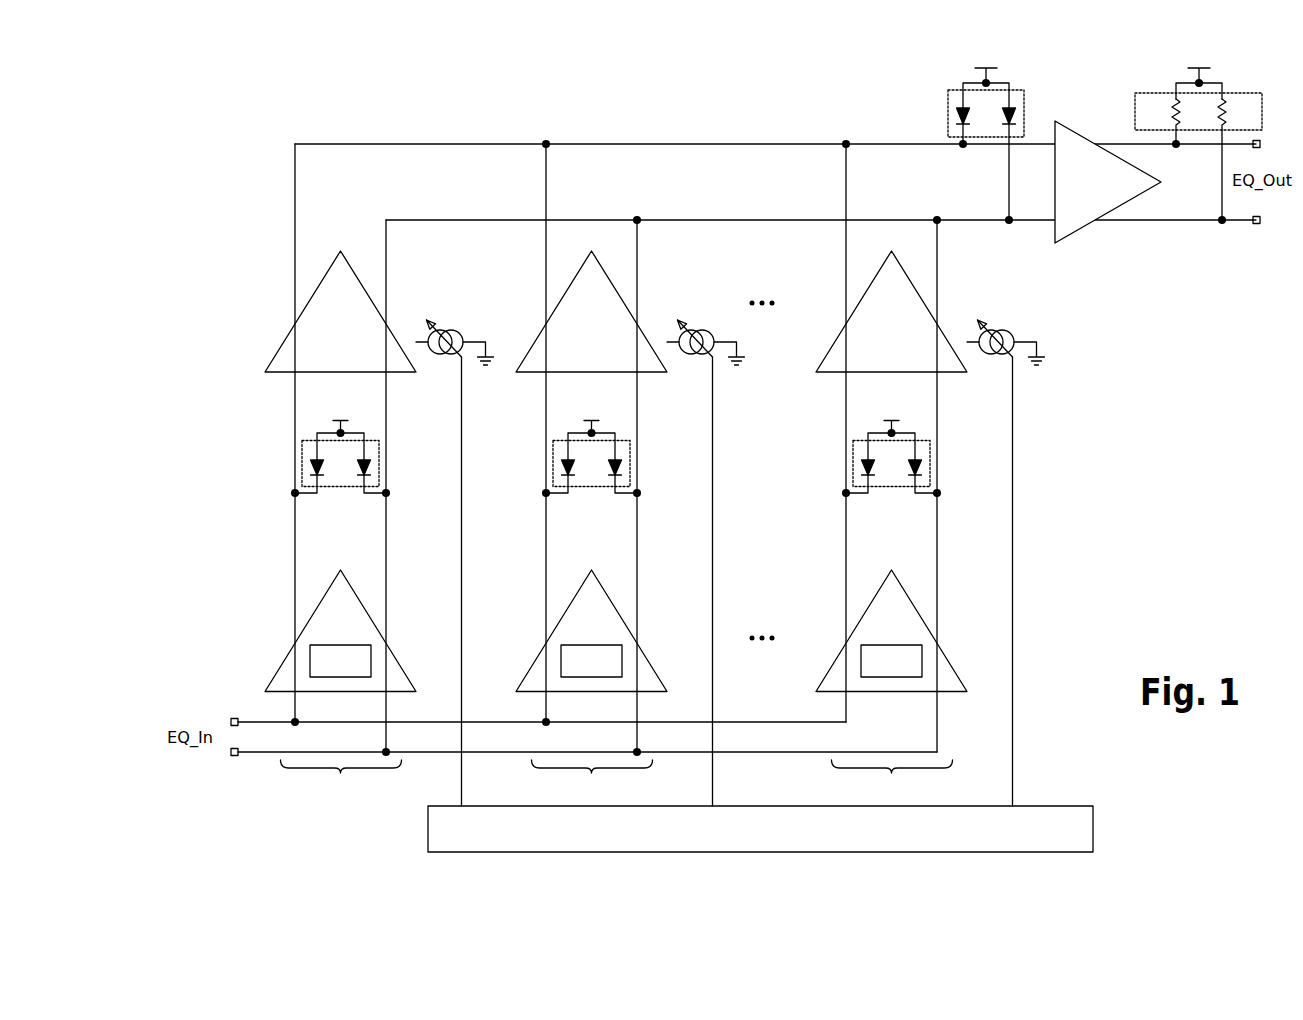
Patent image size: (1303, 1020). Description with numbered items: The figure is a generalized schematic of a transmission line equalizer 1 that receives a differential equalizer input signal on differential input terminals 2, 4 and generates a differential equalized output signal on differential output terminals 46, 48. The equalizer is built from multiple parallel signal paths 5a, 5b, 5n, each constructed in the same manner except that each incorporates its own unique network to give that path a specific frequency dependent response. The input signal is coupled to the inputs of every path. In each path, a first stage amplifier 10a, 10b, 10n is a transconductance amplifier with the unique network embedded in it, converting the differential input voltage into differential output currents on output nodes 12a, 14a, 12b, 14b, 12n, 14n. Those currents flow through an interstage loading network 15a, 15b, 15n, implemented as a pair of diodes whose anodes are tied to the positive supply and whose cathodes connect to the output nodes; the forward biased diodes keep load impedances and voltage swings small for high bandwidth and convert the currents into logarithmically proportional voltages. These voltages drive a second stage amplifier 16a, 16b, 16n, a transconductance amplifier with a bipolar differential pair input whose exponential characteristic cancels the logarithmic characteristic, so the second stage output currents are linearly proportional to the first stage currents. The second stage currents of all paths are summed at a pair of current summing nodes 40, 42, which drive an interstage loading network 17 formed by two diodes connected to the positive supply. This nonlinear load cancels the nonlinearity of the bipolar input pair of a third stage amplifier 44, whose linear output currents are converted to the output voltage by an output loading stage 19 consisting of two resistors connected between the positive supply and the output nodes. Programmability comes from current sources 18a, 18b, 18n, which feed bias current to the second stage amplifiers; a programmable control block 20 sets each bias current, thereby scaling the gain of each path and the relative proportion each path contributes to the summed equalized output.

The transmission line equalizer 1 is at (246, 113).
The differential input terminal 2 is at (237, 727).
The differential input terminal 4 is at (237, 757).
The first signal path 5a is at (341, 779).
The second signal path 5b is at (592, 779).
The nth signal path 5n is at (892, 779).
The first stage amplifier 10a is at (392, 655).
The first stage amplifier 10b is at (644, 655).
The first stage amplifier 10n is at (944, 655).
The output node 12a is at (295, 493).
The output node 12b is at (546, 493).
The output node 12n is at (846, 493).
The output node 14a is at (386, 493).
The output node 14b is at (637, 493).
The output node 14n is at (937, 493).
The interstage loading network 15a is at (302, 449).
The interstage loading network 15b is at (553, 449).
The interstage loading network 15n is at (853, 449).
The second stage amplifier 16a is at (327, 346).
The second stage amplifier 16b is at (578, 346).
The second stage amplifier 16n is at (878, 346).
The interstage loading network 17 is at (948, 100).
The current source 18a is at (452, 331).
The current source 18b is at (702, 331).
The current source 18n is at (1002, 331).
The output loading stage 19 is at (1135, 98).
The programmable control block 20 is at (1038, 838).
The current summing node 40 is at (768, 144).
The current summing node 42 is at (768, 220).
The third stage amplifier 44 is at (1081, 192).
The differential output terminal 46 is at (1261, 140).
The differential output terminal 48 is at (1261, 225).